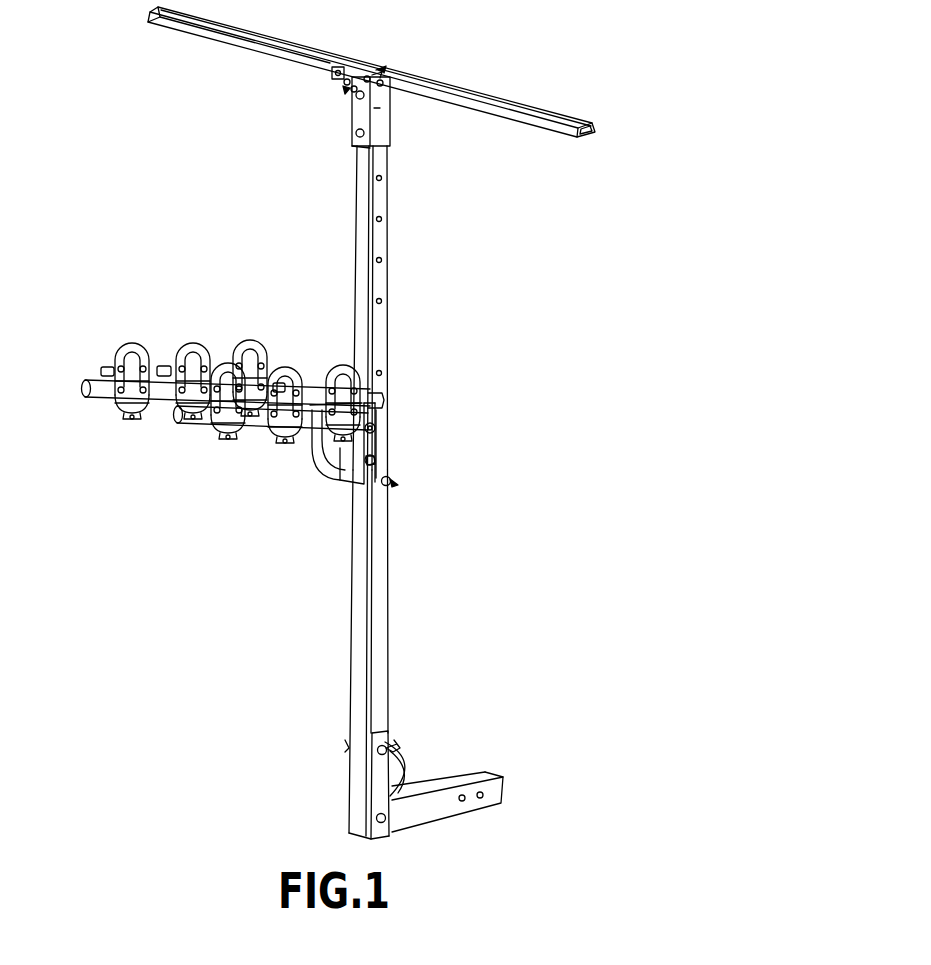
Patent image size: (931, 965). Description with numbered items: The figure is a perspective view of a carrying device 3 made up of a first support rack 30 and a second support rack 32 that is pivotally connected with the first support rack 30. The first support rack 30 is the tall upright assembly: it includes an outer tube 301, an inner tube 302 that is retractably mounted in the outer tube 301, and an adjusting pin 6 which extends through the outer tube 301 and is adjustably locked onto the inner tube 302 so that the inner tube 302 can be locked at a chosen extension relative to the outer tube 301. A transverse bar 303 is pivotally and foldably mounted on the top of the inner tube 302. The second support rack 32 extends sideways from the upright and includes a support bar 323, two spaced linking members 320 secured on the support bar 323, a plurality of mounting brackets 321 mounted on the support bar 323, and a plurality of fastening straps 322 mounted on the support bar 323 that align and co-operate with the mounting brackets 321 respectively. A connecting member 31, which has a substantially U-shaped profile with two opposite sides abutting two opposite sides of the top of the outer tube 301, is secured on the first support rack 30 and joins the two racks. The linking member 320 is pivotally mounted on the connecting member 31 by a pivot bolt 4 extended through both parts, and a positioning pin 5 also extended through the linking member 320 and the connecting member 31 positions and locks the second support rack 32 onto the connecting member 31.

The carrying device 3 is at (472, 342).
The first support rack 30 is at (348, 177).
The outer tube 301 is at (383, 600).
The inner tube 302 is at (378, 275).
The transverse bar 303 is at (477, 95).
The connecting member 31 is at (382, 442).
The second support rack 32 is at (122, 446).
The linking member 320 is at (345, 452).
The mounting bracket 321 is at (150, 368).
The fastening strap 322 is at (118, 353).
The support bar 323 is at (197, 422).
The pivot bolt 4 is at (378, 426).
The positioning pin 5 is at (376, 460).
The adjusting pin 6 is at (391, 482).